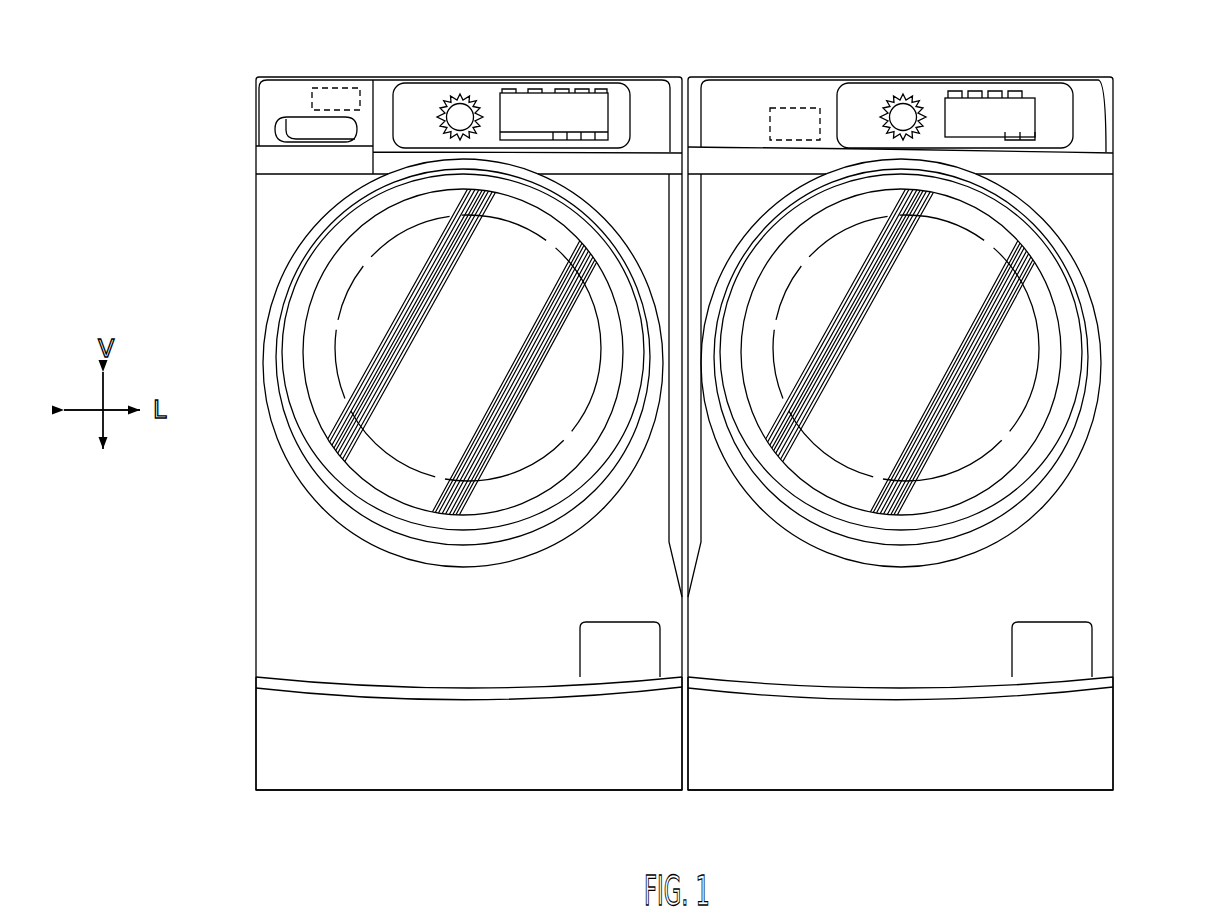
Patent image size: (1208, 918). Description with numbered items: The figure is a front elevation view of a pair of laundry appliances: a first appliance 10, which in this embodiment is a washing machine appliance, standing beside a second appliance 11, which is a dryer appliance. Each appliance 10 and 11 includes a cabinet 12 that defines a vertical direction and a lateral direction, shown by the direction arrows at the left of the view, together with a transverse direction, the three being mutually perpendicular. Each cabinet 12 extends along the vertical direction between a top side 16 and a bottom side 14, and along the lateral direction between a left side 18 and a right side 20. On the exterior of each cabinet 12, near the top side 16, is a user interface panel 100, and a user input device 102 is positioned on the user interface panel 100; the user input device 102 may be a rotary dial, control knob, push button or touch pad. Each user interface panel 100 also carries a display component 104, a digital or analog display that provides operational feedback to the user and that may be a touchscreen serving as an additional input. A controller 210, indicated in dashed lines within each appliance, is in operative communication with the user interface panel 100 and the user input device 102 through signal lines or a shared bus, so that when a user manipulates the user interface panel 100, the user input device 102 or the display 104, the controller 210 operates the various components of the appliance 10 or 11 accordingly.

The first appliance 10 is at (232, 70).
The second appliance 11 is at (1137, 114).
The cabinet 12 is at (273, 585).
The bottom side 14 is at (328, 795).
The top side 16 is at (305, 68).
The left side 18 is at (255, 728).
The right side 20 is at (678, 796).
The user interface panel 100 is at (493, 93).
The user input device 102 is at (458, 112).
The display component 104 is at (578, 110).
The controller 210 is at (343, 84).